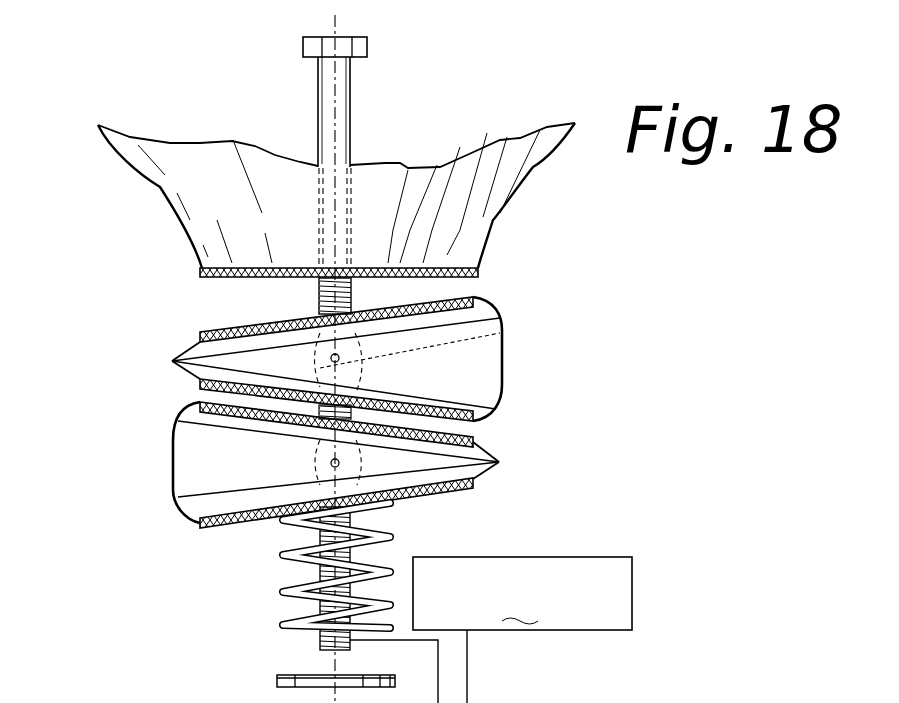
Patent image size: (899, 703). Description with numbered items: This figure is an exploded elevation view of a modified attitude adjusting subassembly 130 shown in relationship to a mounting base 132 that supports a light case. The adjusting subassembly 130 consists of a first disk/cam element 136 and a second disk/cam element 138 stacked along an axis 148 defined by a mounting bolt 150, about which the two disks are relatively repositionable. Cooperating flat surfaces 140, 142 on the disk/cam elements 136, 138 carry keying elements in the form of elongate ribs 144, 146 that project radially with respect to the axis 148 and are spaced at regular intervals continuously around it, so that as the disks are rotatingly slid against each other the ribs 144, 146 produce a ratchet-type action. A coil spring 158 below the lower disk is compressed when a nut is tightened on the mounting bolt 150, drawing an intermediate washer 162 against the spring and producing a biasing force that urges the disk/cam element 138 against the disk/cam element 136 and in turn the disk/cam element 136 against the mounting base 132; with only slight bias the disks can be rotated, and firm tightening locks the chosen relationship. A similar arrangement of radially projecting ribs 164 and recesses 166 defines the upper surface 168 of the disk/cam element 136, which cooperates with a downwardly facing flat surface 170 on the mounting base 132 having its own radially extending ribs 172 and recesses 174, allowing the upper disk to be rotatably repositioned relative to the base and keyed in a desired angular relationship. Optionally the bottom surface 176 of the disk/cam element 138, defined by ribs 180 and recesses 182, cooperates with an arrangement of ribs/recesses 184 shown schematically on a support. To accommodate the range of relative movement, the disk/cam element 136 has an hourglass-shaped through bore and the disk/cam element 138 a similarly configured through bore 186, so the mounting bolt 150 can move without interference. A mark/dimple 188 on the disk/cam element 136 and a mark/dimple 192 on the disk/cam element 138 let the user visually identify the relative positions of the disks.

The adjusting subassembly 130 is at (608, 350).
The mounting base 132 is at (477, 218).
The first disk/cam element 136 is at (503, 352).
The second disk/cam element 138 is at (500, 463).
The flat surface 140 is at (237, 387).
The flat surface 142 is at (227, 399).
The ribs 144 is at (473, 441).
The ribs 146 is at (476, 412).
The axis 148 is at (335, 17).
The mounting bolt 150 is at (318, 95).
The coil spring 158 is at (287, 590).
The intermediate washer 162 is at (285, 676).
The ribs 164 is at (233, 324).
The recesses 166 is at (267, 330).
The upper surface 168 is at (435, 290).
The flat surface 170 is at (235, 276).
The ribs 172 is at (218, 232).
The recesses 174 is at (253, 278).
The bottom surface 176 is at (225, 526).
The ribs 180 is at (213, 533).
The recesses 182 is at (232, 525).
The ribs/recesses 184 is at (500, 333).
The through bore 186 is at (312, 477).
The mark/dimple 188 is at (338, 355).
The mark/dimple 192 is at (338, 461).